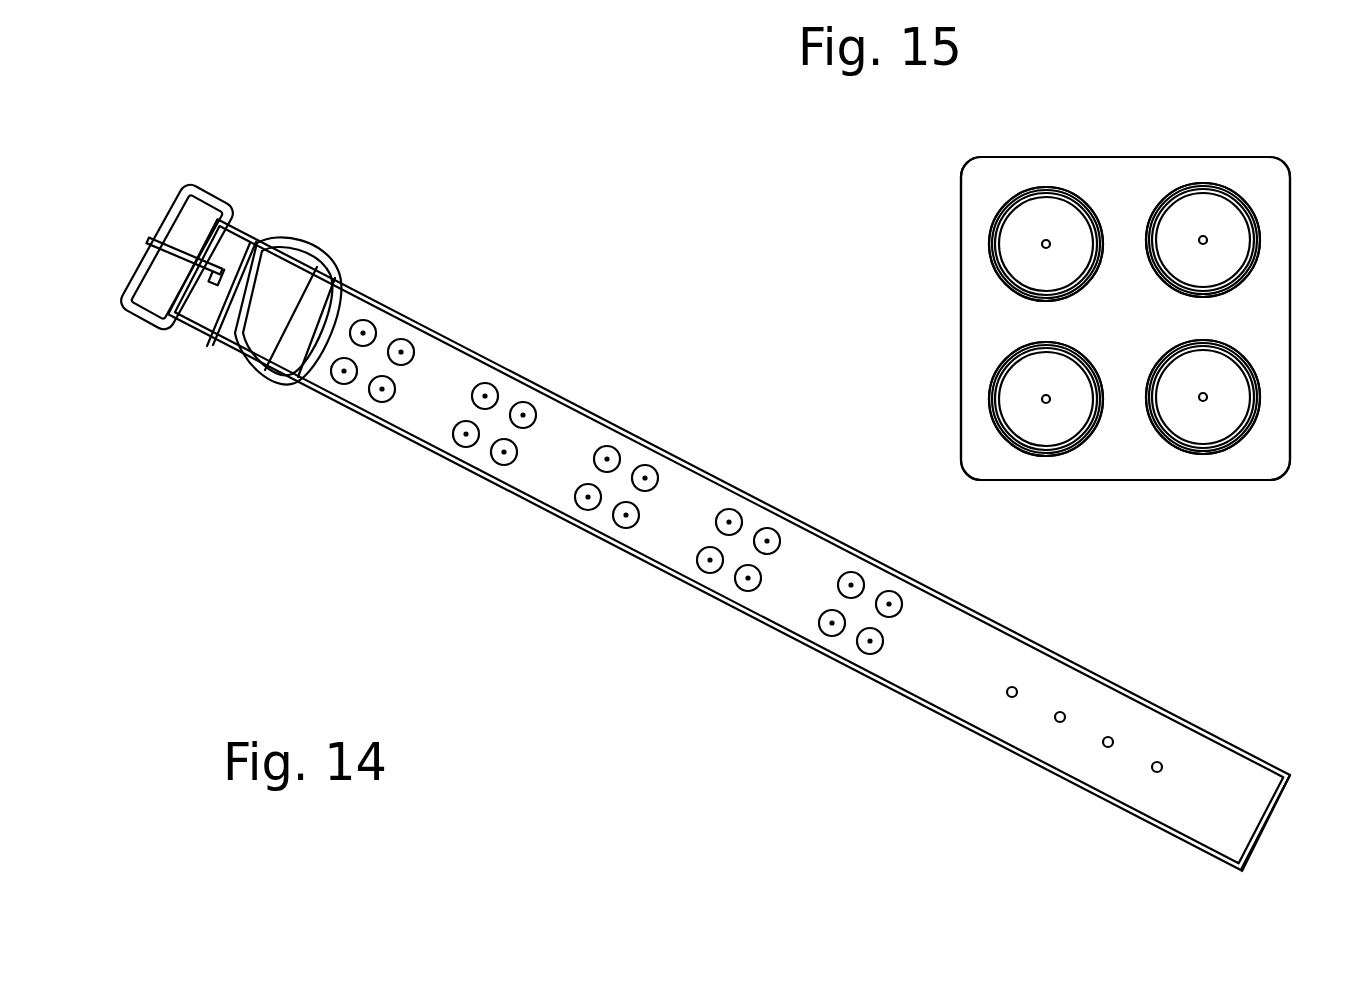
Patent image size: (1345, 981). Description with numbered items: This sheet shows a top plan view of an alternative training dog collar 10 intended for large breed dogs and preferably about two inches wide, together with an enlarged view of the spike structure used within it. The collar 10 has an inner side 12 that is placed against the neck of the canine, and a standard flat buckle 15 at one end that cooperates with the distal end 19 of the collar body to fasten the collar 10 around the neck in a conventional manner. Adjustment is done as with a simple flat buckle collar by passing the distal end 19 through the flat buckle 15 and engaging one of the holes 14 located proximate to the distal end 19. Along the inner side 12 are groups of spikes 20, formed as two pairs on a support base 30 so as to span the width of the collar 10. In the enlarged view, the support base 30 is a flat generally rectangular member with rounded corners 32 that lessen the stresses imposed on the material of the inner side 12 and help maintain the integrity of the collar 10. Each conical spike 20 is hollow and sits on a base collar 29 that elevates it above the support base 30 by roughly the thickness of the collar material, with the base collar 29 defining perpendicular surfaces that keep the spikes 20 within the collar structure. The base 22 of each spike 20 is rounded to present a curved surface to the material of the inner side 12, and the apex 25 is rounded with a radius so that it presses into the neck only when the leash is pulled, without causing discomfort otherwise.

In FIG. 14, the training dog collar 10 is at (575, 307).
In FIG. 14, the inner side 12 is at (537, 480).
In FIG. 14, the holes 14 is at (1018, 692).
In FIG. 14, the flat buckle 15 is at (212, 202).
In FIG. 14, the distal end 19 is at (1238, 842).
In FIG. 14, the spikes 20 is at (453, 432).
In FIG. 15, the spikes 20 is at (1015, 237).
In FIG. 15, the base 22 is at (997, 248).
In FIG. 15, the apex 25 is at (1203, 237).
In FIG. 15, the base collar 29 is at (990, 220).
In FIG. 15, the support base 30 is at (1243, 470).
In FIG. 15, the rounded corners 32 is at (1283, 163).